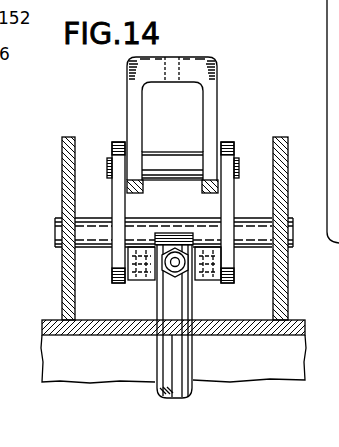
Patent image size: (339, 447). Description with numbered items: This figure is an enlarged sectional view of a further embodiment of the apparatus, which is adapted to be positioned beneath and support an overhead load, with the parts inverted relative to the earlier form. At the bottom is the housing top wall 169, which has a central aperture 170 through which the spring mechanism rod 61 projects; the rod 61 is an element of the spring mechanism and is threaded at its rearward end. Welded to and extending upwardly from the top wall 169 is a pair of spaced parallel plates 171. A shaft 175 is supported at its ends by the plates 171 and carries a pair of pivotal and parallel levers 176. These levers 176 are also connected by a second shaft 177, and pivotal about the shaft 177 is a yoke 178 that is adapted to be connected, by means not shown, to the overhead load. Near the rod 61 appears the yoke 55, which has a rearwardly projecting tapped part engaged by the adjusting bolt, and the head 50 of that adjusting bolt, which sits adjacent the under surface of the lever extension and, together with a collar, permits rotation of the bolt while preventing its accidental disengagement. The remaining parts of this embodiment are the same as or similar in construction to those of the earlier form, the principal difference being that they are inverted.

The yoke 178 is at (213, 69).
The second shaft 177 is at (238, 157).
The levers 176 is at (230, 210).
The shaft 175 is at (93, 228).
The plates 171 is at (61, 272).
The yoke 55 is at (204, 281).
The head 50 is at (172, 271).
The top wall 169 is at (80, 334).
The central aperture 170 is at (147, 343).
The rod 61 is at (184, 361).